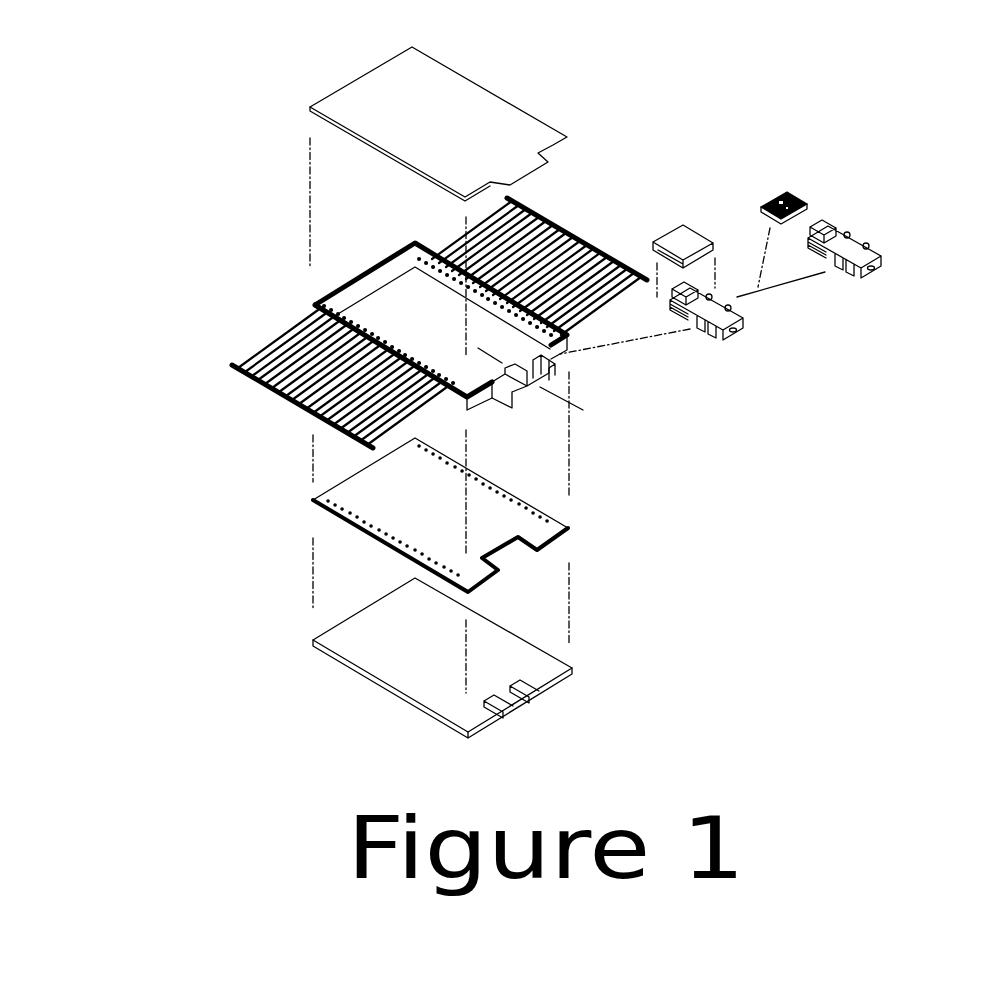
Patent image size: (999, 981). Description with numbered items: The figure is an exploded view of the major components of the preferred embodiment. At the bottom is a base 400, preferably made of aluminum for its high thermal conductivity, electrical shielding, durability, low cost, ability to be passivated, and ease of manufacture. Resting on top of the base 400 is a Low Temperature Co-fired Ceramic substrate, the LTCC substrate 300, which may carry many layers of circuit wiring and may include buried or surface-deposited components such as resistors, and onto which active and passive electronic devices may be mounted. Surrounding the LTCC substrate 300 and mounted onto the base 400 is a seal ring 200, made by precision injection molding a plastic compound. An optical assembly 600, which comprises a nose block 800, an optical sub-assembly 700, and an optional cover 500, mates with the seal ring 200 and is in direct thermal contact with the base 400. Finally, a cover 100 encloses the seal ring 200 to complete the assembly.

The cover 100 is at (337, 100).
The seal ring 200 is at (327, 297).
The LTCC substrate 300 is at (333, 490).
The base 400 is at (333, 632).
The cover 500 is at (682, 235).
The optical assembly 600 is at (733, 313).
The optical sub-assembly 700 is at (787, 192).
The nose block 800 is at (840, 227).